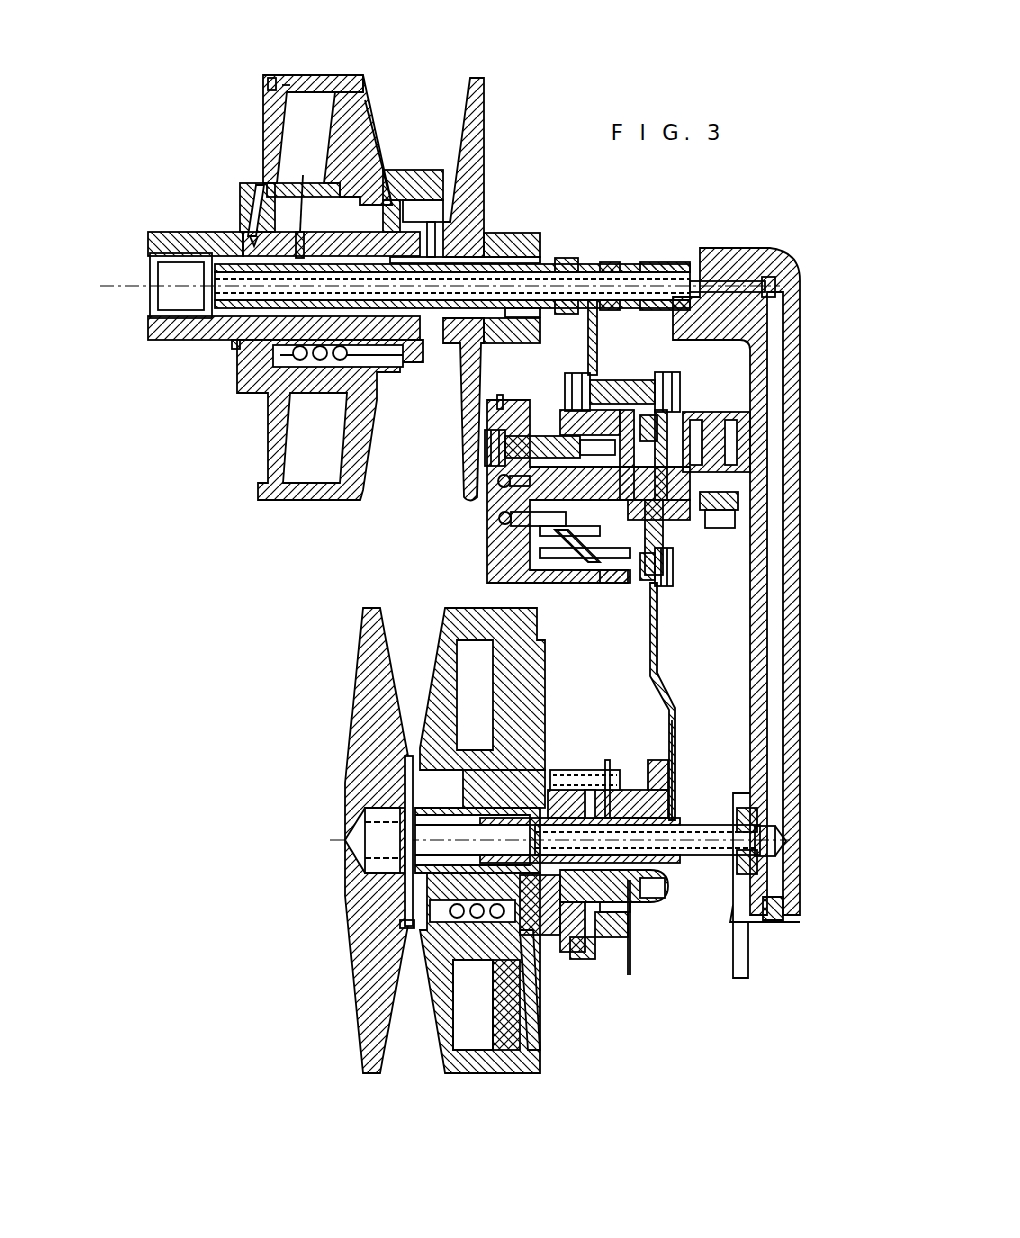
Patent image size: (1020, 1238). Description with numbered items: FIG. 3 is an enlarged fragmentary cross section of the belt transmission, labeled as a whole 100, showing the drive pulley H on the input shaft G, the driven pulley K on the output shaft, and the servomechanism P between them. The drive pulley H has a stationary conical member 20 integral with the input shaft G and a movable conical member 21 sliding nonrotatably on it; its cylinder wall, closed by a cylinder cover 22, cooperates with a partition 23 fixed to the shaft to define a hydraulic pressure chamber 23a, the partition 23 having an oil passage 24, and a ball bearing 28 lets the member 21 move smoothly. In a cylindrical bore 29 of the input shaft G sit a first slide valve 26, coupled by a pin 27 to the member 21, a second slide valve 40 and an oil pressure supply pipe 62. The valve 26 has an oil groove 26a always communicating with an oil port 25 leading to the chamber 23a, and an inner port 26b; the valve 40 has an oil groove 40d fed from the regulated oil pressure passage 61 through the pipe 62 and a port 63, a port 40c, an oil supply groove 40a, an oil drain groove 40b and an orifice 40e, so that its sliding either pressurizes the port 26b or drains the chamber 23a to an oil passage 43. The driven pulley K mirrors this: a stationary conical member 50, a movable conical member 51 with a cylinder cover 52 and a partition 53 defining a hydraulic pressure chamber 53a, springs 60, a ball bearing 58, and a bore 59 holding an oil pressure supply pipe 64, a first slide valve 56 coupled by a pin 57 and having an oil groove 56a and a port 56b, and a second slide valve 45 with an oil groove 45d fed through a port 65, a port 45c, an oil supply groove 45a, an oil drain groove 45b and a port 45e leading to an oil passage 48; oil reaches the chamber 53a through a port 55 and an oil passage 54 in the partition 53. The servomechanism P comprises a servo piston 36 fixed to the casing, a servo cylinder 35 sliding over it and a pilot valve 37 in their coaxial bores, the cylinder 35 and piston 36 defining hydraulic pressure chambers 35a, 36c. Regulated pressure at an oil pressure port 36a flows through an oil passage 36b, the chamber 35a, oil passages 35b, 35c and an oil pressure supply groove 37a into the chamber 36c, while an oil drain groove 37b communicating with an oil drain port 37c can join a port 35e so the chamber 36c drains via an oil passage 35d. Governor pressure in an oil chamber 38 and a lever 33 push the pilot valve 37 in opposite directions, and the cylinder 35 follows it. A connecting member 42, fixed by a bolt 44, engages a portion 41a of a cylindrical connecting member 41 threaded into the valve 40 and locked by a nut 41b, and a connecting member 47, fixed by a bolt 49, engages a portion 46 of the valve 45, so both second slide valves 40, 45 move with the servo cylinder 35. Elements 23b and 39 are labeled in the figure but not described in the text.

The stationary conical member 20 is at (482, 110).
The movable conical member 21 is at (333, 92).
The cylinder cover 22 is at (285, 84).
The partition 23 is at (350, 105).
The hydraulic pressure chamber 23a is at (375, 130).
The flange bottom wall 23b is at (313, 75).
The oil passage 24 is at (258, 190).
The oil port 25 is at (245, 200).
The first slide valve 26 is at (450, 245).
The oil groove 26a is at (195, 240).
The port 26b is at (232, 347).
The pin 27 is at (440, 258).
The ball bearing 28 is at (385, 380).
The cylindrical bore 29 is at (525, 316).
The lever 33 is at (738, 500).
The servo cylinder 35 is at (663, 540).
The hydraulic pressure chamber 35a is at (622, 583).
The oil passage 35b is at (660, 600).
The oil passage 35c is at (660, 565).
The oil passage 35d is at (668, 410).
The port 35e is at (658, 430).
The servo piston 36 is at (487, 560).
The oil pressure port 36a is at (497, 520).
The oil passage 36b is at (576, 583).
The hydraulic pressure chamber 36c is at (670, 512).
The pilot valve 37 is at (745, 465).
The oil pressure supply groove 37a is at (630, 430).
The oil drain groove 37b is at (702, 440).
The oil drain port 37c is at (737, 445).
The oil chamber 38 is at (495, 480).
The nipple 39 is at (498, 481).
The second slide valve 40 is at (545, 262).
The oil supply groove 40a is at (245, 248).
The oil drain groove 40b is at (270, 370).
The port 40c is at (170, 275).
The oil groove 40d is at (200, 340).
The orifice 40e is at (385, 172).
The cylindrical connecting member 41 is at (648, 262).
The portion 41a is at (608, 262).
The nut 41b is at (566, 258).
The connecting member 42 is at (598, 325).
The oil passage 43 is at (423, 228).
The bolt 44 is at (575, 388).
The second slide valve 45 is at (672, 820).
The oil supply groove 45a is at (585, 960).
The oil drain groove 45b is at (405, 790).
The port 45c is at (550, 935).
The oil groove 45d is at (628, 910).
The port 45e is at (500, 832).
The portion 46 is at (742, 825).
The connecting member 47 is at (676, 735).
The oil passage 48 is at (350, 845).
The bolt 49 is at (673, 575).
The stationary conical member 50 is at (365, 1073).
The movable conical member 51 is at (450, 1073).
The cylinder cover 52 is at (533, 1050).
The partition 53 is at (500, 985).
The hydraulic pressure chamber 53a is at (470, 1010).
The oil passage 54 is at (585, 930).
The port 55 is at (606, 760).
The first slide valve 56 is at (620, 800).
The oil groove 56a is at (660, 760).
The port 56b is at (590, 790).
The pin 57 is at (380, 828).
The ball bearing 58 is at (405, 925).
The cylindrical bore 59 is at (668, 880).
The springs 60 is at (555, 770).
The regulated oil pressure passage 61 is at (775, 360).
The oil pressure supply pipe 62 is at (700, 282).
The port 63 is at (300, 202).
The oil pressure supply pipe 64 is at (768, 828).
The port 65 is at (655, 898).
The transmission 100 is at (688, 1004).
The input shaft G is at (148, 318).
The drive pulley H is at (455, 70).
The servomechanism P is at (633, 360).
The driven pulley K is at (486, 1078).